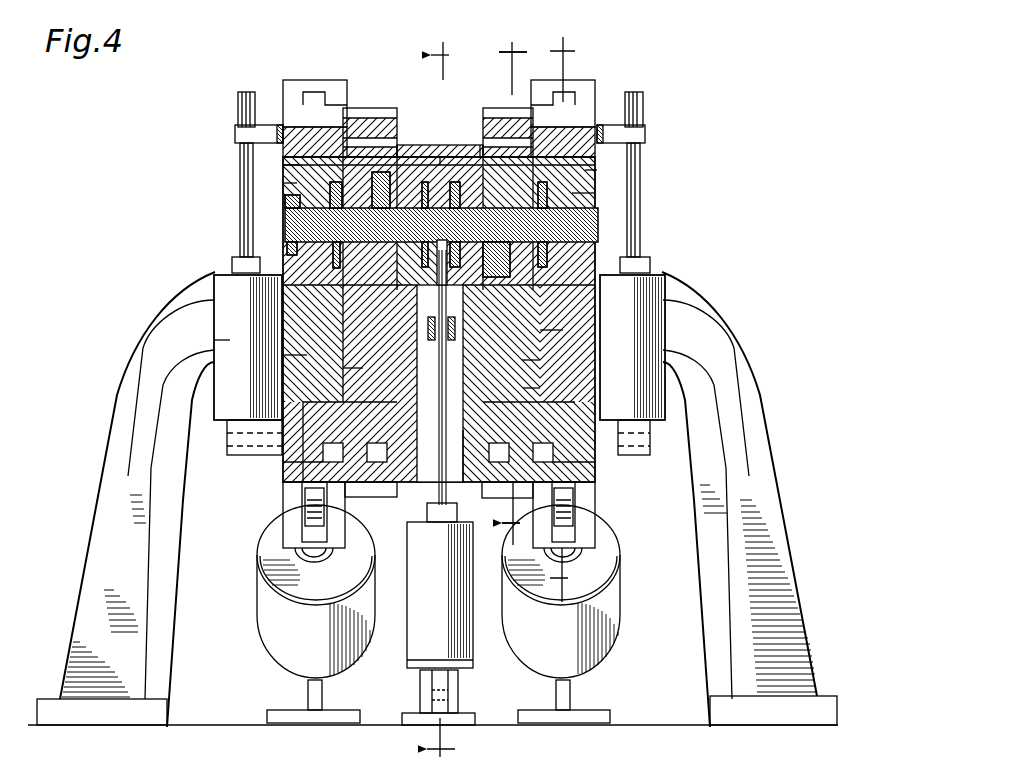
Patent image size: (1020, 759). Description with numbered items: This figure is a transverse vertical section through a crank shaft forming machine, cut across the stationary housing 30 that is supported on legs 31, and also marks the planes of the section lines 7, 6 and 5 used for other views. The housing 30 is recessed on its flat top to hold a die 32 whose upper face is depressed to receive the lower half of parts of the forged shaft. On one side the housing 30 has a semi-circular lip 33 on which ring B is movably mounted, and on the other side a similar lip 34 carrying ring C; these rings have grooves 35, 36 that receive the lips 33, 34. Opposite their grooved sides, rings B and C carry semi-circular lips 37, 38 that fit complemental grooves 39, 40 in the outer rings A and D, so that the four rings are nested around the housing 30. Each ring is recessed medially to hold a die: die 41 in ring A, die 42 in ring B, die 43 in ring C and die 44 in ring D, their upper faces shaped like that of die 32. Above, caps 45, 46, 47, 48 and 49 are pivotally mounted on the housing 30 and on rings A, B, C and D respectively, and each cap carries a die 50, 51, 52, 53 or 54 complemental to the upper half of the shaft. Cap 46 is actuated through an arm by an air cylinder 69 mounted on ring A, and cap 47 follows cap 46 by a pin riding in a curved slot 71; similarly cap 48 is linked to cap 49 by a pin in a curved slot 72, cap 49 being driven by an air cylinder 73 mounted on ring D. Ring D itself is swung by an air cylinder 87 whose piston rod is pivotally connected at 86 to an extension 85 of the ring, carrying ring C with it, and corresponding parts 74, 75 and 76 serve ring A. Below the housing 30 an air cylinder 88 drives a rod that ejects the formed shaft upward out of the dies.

The legs 31 is at (140, 381).
The curved slot 72 is at (349, 128).
The cap 48 is at (386, 128).
The cap 45 is at (417, 153).
The die 50 is at (440, 165).
The cap 47 is at (480, 150).
The curved slot 71 is at (503, 147).
The cap 46 is at (585, 148).
The cap 49 is at (300, 140).
The die 52 is at (597, 170).
The die 51 is at (572, 193).
The die 53 is at (295, 166).
The die 54 is at (297, 183).
The die 42 is at (575, 258).
The die 41 is at (570, 273).
The die 44 is at (286, 262).
The die 43 is at (350, 283).
The air cylinder 69 is at (660, 290).
The air cylinder 73 is at (230, 340).
The ring D is at (307, 355).
The ring C is at (363, 368).
The ring A is at (563, 330).
The ring B is at (522, 360).
The groove 36 is at (350, 400).
The groove 39 is at (567, 402).
The groove 35 is at (523, 388).
The groove 40 is at (310, 405).
The semi-circular lip 38 is at (305, 458).
The semi-circular lip 37 is at (575, 450).
The die 32 is at (455, 317).
The stationary housing 30 is at (420, 315).
The semi-circular lip 33 is at (458, 430).
The semi-circular lip 34 is at (398, 493).
The extension 85 is at (290, 502).
The pivotal connection 86 is at (303, 518).
The extension 74 is at (583, 493).
The pivotal connection 75 is at (565, 515).
The air cylinder 87 is at (278, 615).
The air cylinder 76 is at (613, 593).
The air cylinder 88 is at (463, 628).
The section line 7 is at (440, 51).
The section line 6 is at (513, 288).
The section line 5 is at (501, 388).